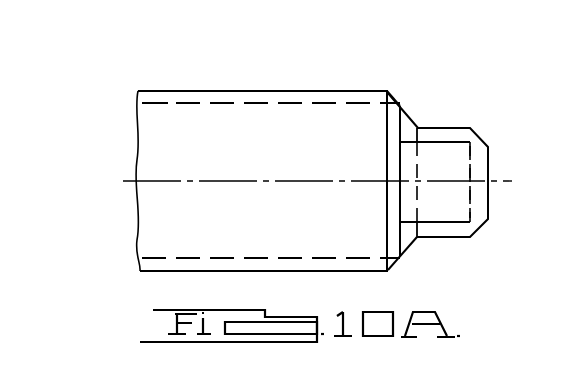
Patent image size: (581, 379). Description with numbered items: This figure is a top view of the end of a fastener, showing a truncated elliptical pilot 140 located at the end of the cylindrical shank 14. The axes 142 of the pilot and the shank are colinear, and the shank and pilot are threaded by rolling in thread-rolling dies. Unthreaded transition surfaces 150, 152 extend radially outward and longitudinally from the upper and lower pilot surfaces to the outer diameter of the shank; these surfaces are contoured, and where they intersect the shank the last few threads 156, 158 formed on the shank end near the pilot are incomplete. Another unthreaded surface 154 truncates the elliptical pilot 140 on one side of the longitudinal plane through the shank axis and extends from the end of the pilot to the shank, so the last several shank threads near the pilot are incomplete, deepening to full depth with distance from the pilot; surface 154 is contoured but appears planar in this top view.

The cylindrical shank 14 is at (216, 110).
The axes 142 is at (271, 192).
The incomplete thread 156 is at (380, 95).
The unthreaded transition surface 150 is at (400, 102).
The unthreaded transition surface 152 is at (390, 260).
The incomplete thread 158 is at (383, 272).
The elliptical pilot 140 is at (450, 128).
The unthreaded surface 154 is at (463, 205).